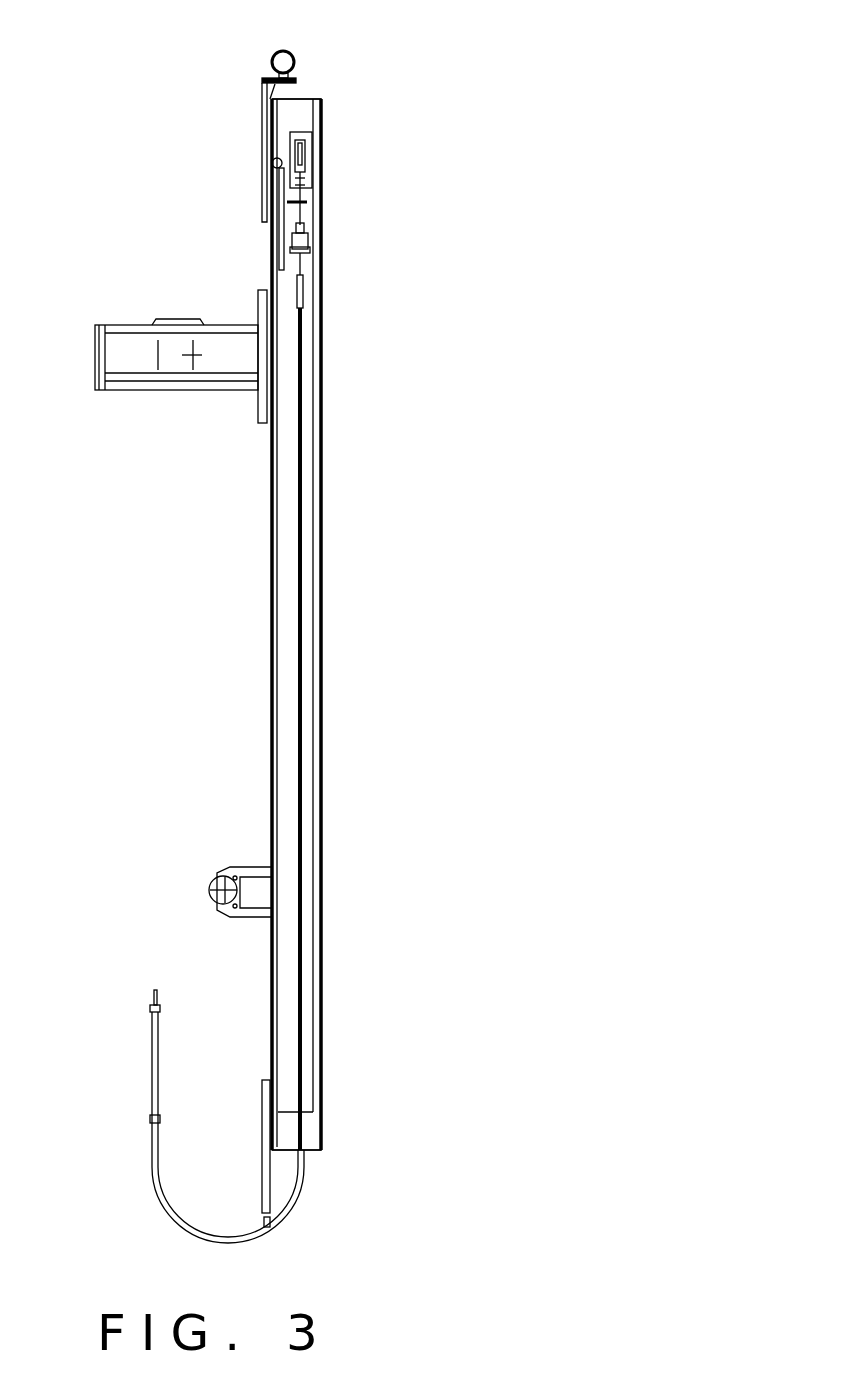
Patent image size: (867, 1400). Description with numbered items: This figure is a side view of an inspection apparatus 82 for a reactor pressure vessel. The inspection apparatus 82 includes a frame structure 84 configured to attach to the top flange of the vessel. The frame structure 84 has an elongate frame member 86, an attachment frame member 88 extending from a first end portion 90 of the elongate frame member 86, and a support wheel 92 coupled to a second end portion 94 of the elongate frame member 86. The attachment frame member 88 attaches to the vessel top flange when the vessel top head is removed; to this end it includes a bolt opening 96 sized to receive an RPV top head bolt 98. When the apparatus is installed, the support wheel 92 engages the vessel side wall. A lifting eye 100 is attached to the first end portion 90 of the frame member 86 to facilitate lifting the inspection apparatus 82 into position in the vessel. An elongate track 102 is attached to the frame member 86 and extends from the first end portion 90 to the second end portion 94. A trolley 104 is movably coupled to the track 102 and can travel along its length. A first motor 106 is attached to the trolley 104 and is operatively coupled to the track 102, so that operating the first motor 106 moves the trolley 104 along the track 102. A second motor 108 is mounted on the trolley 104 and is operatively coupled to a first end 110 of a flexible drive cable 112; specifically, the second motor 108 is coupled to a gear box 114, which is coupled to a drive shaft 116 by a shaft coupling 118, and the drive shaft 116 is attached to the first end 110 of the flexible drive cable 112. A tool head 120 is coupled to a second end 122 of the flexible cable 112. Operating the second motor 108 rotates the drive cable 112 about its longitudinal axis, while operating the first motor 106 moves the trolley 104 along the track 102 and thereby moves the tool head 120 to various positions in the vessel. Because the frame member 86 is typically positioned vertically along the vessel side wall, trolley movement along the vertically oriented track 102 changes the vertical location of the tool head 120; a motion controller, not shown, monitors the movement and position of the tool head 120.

The inspection apparatus 82 is at (490, 172).
The frame structure 84 is at (236, 186).
The elongate frame member 86 is at (270, 653).
The attachment frame member 88 is at (140, 392).
The first end portion 90 is at (246, 258).
The support wheel 92 is at (208, 888).
The second end portion 94 is at (227, 942).
The bolt opening 96 is at (155, 350).
The RPV top head bolt 98 is at (184, 355).
The lifting eye 100 is at (291, 53).
The elongate track 102 is at (278, 535).
The trolley 104 is at (280, 235).
The first motor 106 is at (272, 160).
The second motor 108 is at (313, 133).
The first end 110 is at (316, 313).
The flexible drive cable 112 is at (298, 383).
The gear box 114 is at (299, 155).
The drive shaft 116 is at (298, 213).
The shaft coupling 118 is at (306, 240).
The tool head 120 is at (150, 1077).
The second end 122 is at (147, 1133).